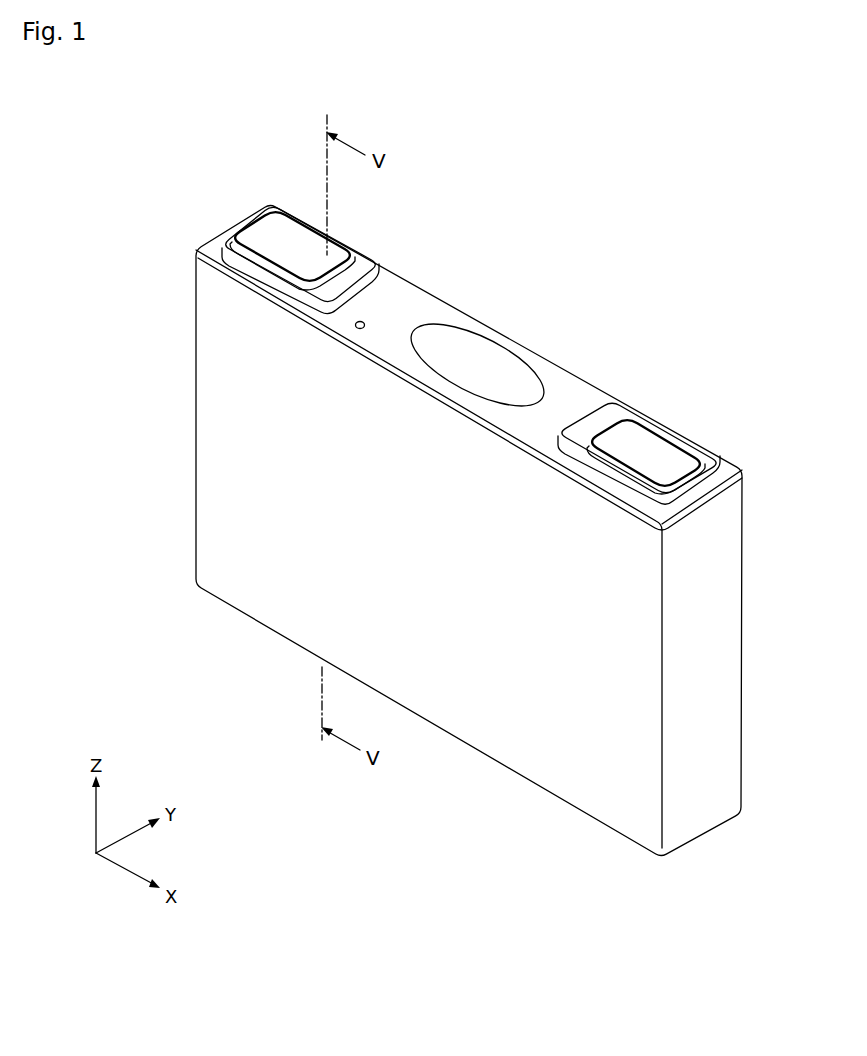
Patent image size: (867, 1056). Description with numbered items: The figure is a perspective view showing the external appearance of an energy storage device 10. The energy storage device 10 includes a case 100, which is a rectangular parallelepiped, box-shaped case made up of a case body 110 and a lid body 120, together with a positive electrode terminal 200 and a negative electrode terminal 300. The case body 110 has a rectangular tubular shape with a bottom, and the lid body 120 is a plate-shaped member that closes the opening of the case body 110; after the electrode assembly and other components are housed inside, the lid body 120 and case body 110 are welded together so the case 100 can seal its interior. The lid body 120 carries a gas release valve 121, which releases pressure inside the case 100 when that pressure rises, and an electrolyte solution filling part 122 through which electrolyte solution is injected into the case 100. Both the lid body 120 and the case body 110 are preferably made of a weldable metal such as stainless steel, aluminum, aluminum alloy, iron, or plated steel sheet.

The energy storage device 10 is at (672, 187).
The case 100 is at (397, 549).
The case body 110 is at (222, 457).
The lid body 120 is at (338, 320).
The gas release valve 121 is at (500, 345).
The electrolyte solution filling part 122 is at (365, 322).
The positive electrode terminal 200 is at (290, 228).
The negative electrode terminal 300 is at (665, 445).